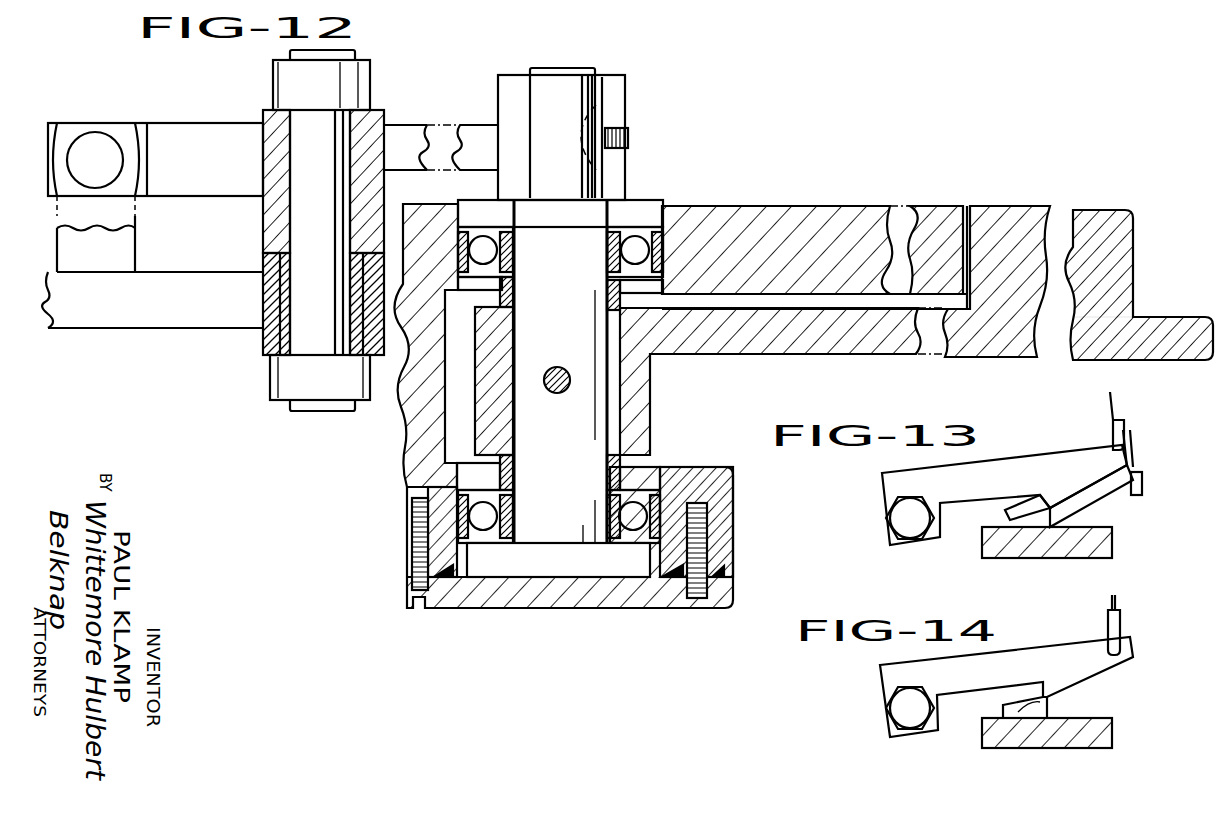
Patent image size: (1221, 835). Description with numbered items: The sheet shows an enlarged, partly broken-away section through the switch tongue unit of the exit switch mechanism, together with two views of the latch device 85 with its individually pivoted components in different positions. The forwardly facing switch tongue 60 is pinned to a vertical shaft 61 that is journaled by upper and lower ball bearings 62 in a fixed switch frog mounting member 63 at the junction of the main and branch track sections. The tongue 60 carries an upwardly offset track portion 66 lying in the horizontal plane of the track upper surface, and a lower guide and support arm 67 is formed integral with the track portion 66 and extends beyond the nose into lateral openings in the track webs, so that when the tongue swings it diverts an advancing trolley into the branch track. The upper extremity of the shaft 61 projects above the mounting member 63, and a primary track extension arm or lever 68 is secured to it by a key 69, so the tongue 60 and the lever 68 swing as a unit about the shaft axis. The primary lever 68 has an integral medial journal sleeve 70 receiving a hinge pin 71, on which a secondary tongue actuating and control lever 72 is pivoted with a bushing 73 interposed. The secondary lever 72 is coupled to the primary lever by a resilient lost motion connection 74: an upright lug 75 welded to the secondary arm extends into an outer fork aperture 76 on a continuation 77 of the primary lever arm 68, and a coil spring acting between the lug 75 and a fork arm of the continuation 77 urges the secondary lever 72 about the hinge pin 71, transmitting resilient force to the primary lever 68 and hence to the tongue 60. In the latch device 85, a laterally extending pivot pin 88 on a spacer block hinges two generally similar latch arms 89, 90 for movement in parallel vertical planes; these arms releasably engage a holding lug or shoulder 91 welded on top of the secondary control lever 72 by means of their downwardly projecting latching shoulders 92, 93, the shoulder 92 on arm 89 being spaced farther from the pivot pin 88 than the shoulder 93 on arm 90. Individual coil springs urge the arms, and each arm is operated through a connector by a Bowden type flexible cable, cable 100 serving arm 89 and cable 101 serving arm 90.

In FIG. 12, the switch tongue 60 is at (718, 335).
In FIG. 12, the vertical shaft 61 is at (573, 437).
In FIG. 12, the ball bearings 62 is at (641, 238).
In FIG. 12, the switch frog mounting member 63 is at (748, 213).
In FIG. 12, the track portion 66 is at (1125, 215).
In FIG. 12, the lower guide and support arm 67 is at (1184, 340).
In FIG. 12, the primary track extension arm 68 is at (473, 140).
In FIG. 12, the key 69 is at (598, 122).
In FIG. 12, the medial journal sleeve 70 is at (266, 220).
In FIG. 12, the hinge pin 71 is at (300, 318).
In FIG. 12, the secondary tongue actuating and control lever 72 is at (150, 313).
In FIG. 13, the secondary tongue actuating and control lever 72 is at (1081, 540).
In FIG. 14, the secondary tongue actuating and control lever 72 is at (1100, 718).
In FIG. 12, the bushing 73 is at (272, 366).
In FIG. 12, the resilient lost motion connection 74 is at (120, 112).
In FIG. 12, the upright lug 75 is at (120, 256).
In FIG. 12, the fork aperture 76 is at (137, 130).
In FIG. 12, the continuation of the primary lever arm 77 is at (195, 148).
In FIG. 13, the latch device 85 is at (1124, 527).
In FIG. 14, the latch device 85 is at (1143, 617).
In FIG. 13, the pivot pin 88 is at (930, 522).
In FIG. 14, the pivot pin 88 is at (903, 713).
In FIG. 13, the latch arm 89 is at (1133, 498).
In FIG. 13, the latch arm 90 is at (1005, 457).
In FIG. 14, the latch arm 90 is at (1025, 647).
In FIG. 13, the holding lug 91 is at (1008, 509).
In FIG. 14, the holding lug 91 is at (1010, 740).
In FIG. 13, the latching shoulder 92 is at (1055, 516).
In FIG. 14, the latching shoulder 92 is at (1047, 693).
In FIG. 13, the latching shoulder 93 is at (1027, 498).
In FIG. 14, the latching shoulder 93 is at (1033, 689).
In FIG. 13, the flexible cable 100 is at (1135, 434).
In FIG. 13, the flexible cable 101 is at (1112, 412).
In FIG. 14, the flexible cable 101 is at (1106, 606).